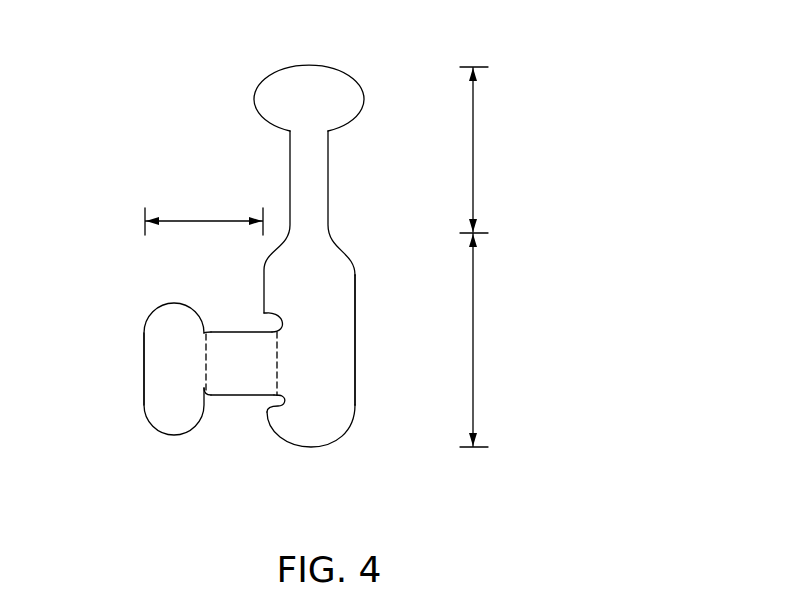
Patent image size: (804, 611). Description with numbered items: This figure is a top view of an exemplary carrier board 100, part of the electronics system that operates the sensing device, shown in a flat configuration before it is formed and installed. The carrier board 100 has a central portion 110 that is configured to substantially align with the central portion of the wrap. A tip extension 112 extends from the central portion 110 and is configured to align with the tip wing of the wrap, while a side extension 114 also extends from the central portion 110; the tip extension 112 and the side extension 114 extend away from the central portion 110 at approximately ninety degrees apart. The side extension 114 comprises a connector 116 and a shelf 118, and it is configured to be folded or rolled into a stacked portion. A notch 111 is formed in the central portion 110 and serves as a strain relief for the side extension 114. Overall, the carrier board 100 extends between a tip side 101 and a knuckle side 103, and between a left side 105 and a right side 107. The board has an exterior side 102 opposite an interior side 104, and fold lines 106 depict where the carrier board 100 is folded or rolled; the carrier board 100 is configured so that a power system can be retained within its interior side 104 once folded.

The carrier board 100 is at (458, 43).
The tip side 101 is at (273, 60).
The exterior side 102 is at (341, 454).
The knuckle side 103 is at (304, 459).
The interior side 104 is at (337, 352).
The left side 105 is at (116, 369).
The fold lines 106 is at (265, 358).
The right side 107 is at (366, 402).
The central portion 110 is at (476, 337).
The notch 111 is at (261, 318).
The tip extension 112 is at (476, 147).
The side extension 114 is at (204, 216).
The connector 116 is at (240, 372).
The shelf 118 is at (165, 395).